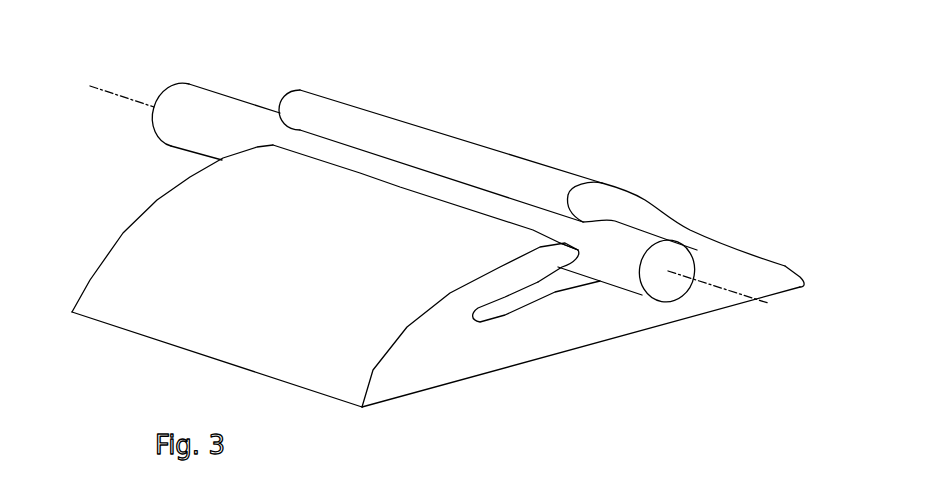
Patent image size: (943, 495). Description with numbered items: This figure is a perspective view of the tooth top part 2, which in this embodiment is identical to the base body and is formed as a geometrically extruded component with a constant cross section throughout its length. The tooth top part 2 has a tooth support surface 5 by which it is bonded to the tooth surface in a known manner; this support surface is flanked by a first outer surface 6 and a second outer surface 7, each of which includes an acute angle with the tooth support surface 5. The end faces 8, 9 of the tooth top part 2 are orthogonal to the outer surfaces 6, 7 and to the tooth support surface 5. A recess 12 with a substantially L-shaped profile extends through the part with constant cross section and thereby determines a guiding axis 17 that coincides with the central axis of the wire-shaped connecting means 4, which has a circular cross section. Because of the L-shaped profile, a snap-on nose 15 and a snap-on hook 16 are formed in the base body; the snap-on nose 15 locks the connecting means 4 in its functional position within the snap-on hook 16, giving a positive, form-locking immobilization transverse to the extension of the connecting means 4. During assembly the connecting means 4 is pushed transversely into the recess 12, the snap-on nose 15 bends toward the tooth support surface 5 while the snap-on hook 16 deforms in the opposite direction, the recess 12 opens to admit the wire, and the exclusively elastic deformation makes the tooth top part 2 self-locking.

The tooth top part 2 is at (557, 133).
The connecting means 4 is at (673, 260).
The tooth support surface 5 is at (710, 308).
The first outer surface 6 is at (190, 270).
The second outer surface 7 is at (648, 207).
The end face 8 is at (735, 258).
The end face 9 is at (190, 172).
The recess 12 is at (506, 306).
The snap-on nose 15 is at (527, 265).
The snap-on hook 16 is at (592, 200).
The guiding axis 17 is at (120, 94).